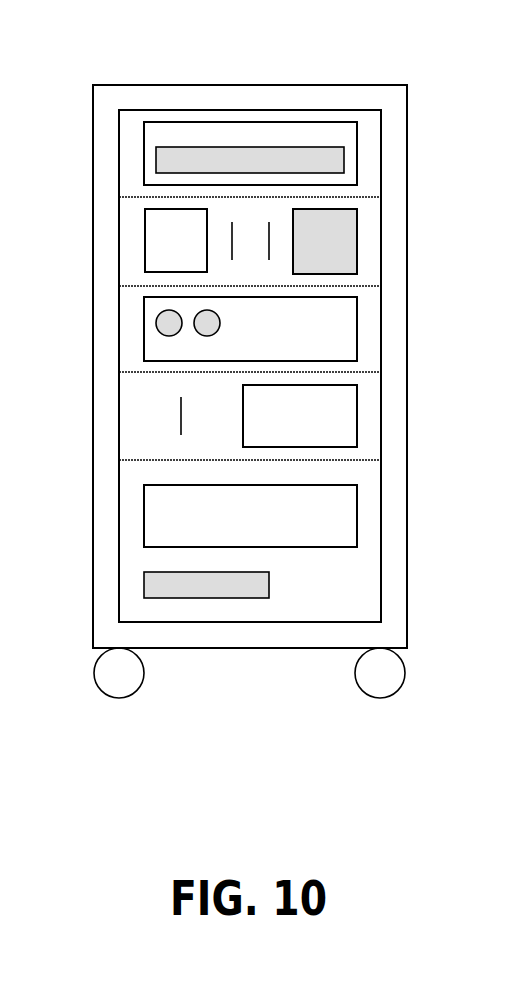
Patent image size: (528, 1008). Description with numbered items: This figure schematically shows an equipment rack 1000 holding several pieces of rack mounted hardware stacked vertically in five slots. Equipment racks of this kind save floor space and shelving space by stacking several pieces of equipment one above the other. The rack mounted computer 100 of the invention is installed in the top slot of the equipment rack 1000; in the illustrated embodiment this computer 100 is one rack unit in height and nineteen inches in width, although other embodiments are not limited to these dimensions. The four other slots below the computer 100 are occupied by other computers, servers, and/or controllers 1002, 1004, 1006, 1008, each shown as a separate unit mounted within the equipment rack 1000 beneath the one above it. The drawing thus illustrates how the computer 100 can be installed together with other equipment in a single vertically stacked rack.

The equipment rack 1000 is at (132, 98).
The computer 100 is at (368, 174).
The controller 1002 is at (368, 246).
The controller 1004 is at (368, 335).
The controller 1006 is at (368, 410).
The controller 1008 is at (368, 522).